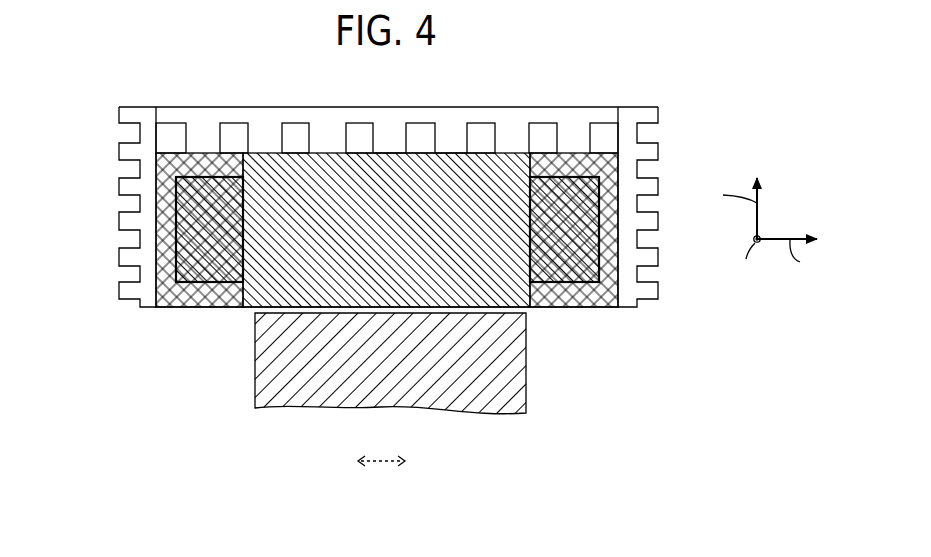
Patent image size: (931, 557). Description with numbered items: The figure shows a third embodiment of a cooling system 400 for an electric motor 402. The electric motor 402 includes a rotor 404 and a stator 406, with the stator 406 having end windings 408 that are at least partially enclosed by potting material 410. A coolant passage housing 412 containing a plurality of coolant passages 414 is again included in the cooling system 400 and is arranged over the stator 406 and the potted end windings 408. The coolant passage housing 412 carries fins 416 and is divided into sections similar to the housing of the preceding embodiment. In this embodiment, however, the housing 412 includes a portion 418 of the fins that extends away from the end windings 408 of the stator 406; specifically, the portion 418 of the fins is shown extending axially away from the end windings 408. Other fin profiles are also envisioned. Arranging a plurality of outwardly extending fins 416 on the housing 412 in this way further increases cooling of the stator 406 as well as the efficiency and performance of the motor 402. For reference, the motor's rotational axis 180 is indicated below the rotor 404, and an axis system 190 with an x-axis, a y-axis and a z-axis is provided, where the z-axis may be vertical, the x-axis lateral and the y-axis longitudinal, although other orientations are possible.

The cooling system 400 is at (694, 133).
The electric motor 402 is at (749, 94).
The rotor 404 is at (371, 372).
The stator 406 is at (359, 147).
The end windings 408 is at (194, 236).
The potting material 410 is at (203, 295).
The coolant passage housing 412 is at (325, 93).
The coolant passages 414 is at (298, 141).
The fins 416 is at (447, 140).
The portion of the fins 418 is at (132, 185).
The rotational axis 180 is at (385, 458).
The axis system 190 is at (791, 196).